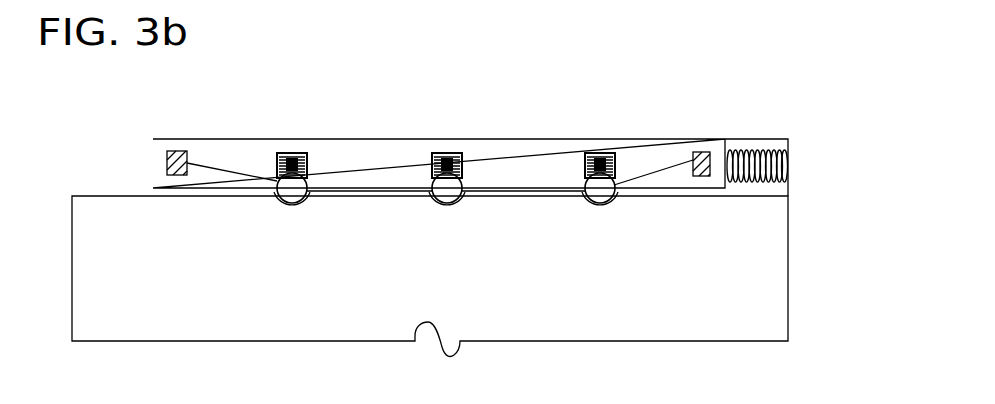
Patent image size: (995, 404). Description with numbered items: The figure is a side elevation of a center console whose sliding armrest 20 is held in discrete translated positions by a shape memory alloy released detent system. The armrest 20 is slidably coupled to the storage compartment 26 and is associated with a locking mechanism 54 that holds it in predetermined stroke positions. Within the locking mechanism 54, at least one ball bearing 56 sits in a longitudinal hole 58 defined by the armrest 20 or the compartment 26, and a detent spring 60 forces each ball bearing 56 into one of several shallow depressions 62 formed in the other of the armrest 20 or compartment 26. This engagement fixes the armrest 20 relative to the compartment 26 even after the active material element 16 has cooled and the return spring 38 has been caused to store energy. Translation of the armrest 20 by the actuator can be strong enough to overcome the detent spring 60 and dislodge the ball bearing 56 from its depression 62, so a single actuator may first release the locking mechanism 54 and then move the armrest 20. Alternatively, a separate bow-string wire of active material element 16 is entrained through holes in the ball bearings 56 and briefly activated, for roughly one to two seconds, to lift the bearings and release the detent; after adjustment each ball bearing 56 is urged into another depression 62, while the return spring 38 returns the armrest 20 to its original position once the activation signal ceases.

The active material element 16 is at (236, 172).
The sliding armrest 20 is at (650, 139).
The storage compartment 26 is at (553, 283).
The return spring 38 is at (765, 150).
The locking mechanism 54 is at (367, 143).
The ball bearing 56 is at (277, 178).
The longitudinal hole 58 is at (433, 152).
The detent spring 60 is at (586, 153).
The shallow depression 62 is at (603, 203).